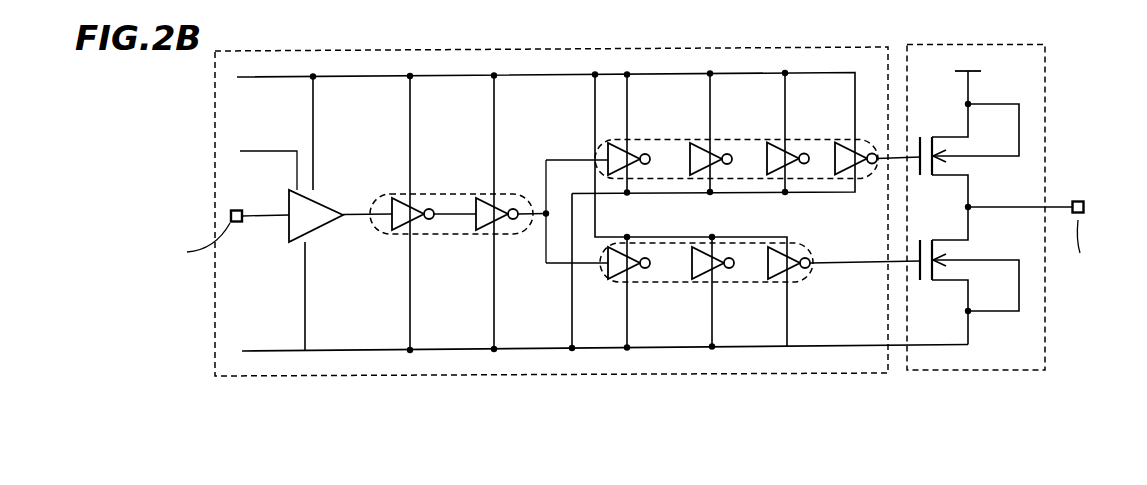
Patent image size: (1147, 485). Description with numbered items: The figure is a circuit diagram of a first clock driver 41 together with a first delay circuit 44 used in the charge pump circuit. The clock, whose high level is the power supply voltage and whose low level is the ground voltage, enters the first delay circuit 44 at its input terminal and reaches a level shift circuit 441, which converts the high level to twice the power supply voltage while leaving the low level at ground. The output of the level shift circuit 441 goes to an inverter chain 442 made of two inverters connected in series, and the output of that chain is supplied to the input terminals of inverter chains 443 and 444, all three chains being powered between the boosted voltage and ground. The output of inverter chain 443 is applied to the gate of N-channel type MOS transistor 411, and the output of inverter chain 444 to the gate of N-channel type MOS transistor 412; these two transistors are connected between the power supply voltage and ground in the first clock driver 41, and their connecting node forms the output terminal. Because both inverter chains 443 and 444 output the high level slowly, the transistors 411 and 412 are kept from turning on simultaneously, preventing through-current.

The first delay circuit 44 is at (447, 48).
The level shift circuit 441 is at (312, 222).
The inverter chain 442 is at (426, 238).
The inverter chain 443 is at (660, 140).
The inverter chain 444 is at (673, 283).
The first clock driver 41 is at (942, 43).
The N-channel type MOS transistor 411 is at (1005, 103).
The N-channel type MOS transistor 412 is at (1023, 288).